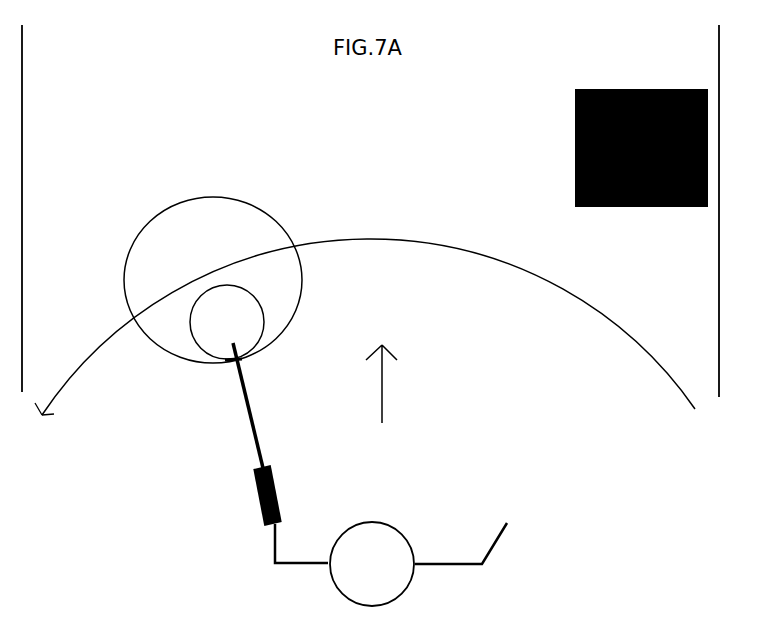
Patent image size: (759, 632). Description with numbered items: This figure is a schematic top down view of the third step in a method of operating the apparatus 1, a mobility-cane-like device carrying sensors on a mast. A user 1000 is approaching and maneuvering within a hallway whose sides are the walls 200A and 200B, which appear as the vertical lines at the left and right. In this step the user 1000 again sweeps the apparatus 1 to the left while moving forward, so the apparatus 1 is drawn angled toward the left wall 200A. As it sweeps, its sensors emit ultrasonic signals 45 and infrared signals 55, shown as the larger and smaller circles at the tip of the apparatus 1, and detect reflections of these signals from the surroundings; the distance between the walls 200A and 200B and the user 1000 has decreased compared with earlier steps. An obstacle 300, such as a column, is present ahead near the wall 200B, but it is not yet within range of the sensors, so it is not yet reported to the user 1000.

The hallway side 200A is at (48, 95).
The hallway side 200B is at (694, 77).
The obstacle 300 is at (575, 157).
The ultrasonic signals 45 is at (267, 215).
The infrared signals 55 is at (263, 316).
The apparatus 1 is at (236, 481).
The user 1000 is at (282, 598).